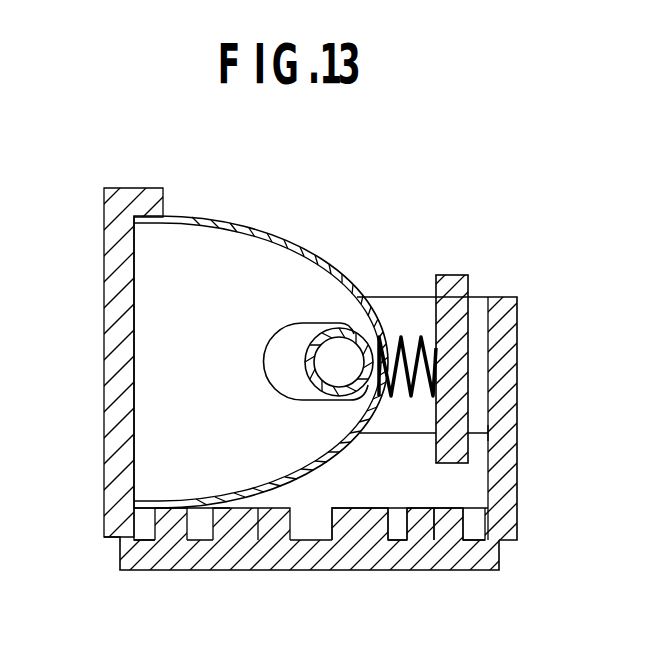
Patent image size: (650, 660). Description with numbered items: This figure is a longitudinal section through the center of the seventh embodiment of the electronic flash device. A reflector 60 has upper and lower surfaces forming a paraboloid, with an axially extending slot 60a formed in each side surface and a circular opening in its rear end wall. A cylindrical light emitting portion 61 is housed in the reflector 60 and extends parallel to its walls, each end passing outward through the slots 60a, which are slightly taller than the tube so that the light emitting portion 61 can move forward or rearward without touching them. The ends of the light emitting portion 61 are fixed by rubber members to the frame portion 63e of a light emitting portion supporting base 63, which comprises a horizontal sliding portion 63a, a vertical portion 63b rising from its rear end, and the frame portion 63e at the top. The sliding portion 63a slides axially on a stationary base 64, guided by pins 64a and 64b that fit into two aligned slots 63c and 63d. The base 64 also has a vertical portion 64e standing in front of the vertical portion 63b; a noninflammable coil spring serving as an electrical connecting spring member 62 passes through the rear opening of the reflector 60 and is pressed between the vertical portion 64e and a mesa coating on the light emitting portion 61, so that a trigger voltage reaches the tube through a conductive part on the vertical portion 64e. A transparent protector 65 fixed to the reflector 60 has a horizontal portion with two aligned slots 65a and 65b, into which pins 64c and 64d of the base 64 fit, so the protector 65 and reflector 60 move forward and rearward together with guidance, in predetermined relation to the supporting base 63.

The reflector 60 is at (229, 217).
The axially extending slot 60a is at (291, 337).
The light emitting portion 61 is at (327, 328).
The electrical connecting spring member 62 is at (402, 340).
The light emitting portion supporting base 63 is at (506, 320).
The horizontal sliding portion 63a is at (422, 527).
The vertical portion 63b is at (506, 433).
The slot 63c is at (475, 522).
The slot 63d is at (396, 520).
The frame portion 63e is at (418, 296).
The base 64 is at (499, 553).
The pin 64a is at (453, 522).
The pin 64b is at (398, 523).
The pin 64c is at (223, 510).
The pin 64d is at (168, 518).
The vertical portion 64e is at (458, 276).
The protector 65 is at (130, 188).
The slot 65a is at (218, 513).
The slot 65b is at (145, 517).